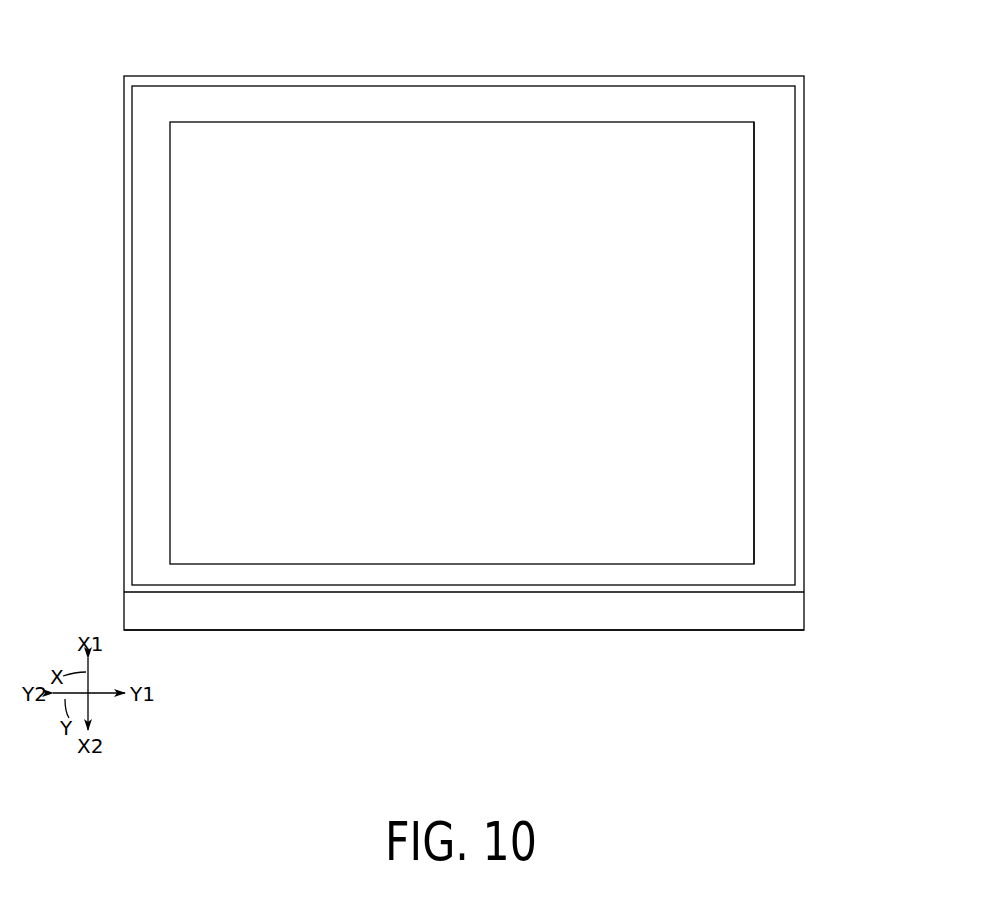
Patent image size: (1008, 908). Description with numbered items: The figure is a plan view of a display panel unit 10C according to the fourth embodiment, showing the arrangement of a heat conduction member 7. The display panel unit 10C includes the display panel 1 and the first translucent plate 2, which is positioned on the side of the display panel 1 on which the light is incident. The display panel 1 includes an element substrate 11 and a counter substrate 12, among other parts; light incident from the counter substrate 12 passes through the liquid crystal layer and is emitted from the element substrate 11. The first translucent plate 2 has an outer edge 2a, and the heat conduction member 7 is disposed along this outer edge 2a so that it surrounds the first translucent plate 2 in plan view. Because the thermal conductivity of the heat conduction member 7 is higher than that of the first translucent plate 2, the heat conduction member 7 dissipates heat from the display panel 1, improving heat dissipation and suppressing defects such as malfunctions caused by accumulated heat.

The display panel unit 10C is at (836, 125).
The heat conduction member 7 is at (798, 195).
The first translucent plate 2 is at (757, 395).
The outer edge 2a is at (755, 475).
The display panel 1 is at (516, 629).
The counter substrate 12 is at (759, 595).
The element substrate 11 is at (763, 633).